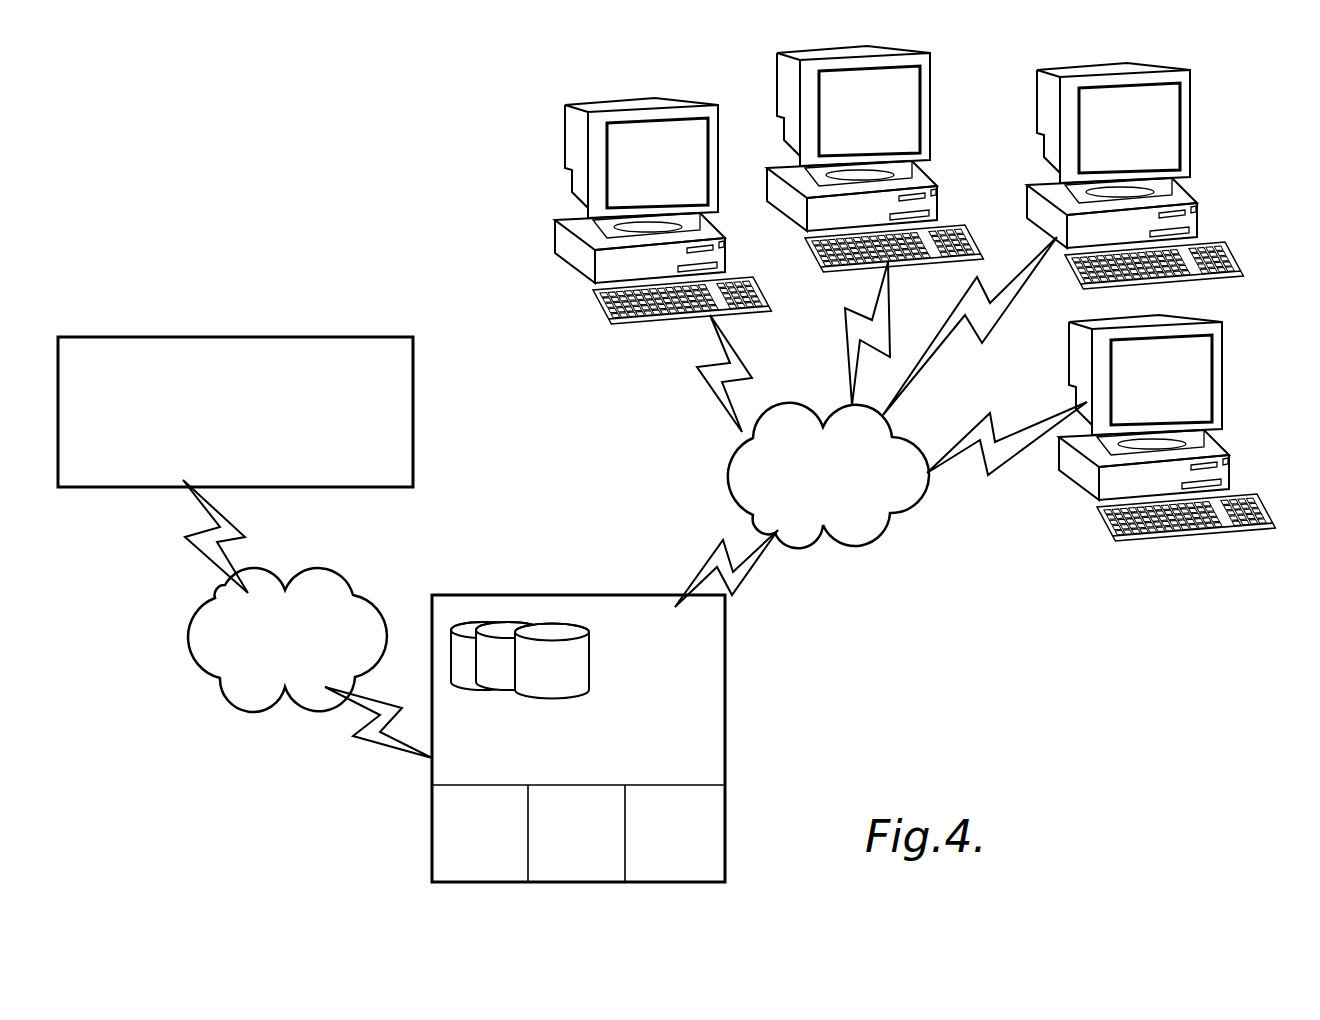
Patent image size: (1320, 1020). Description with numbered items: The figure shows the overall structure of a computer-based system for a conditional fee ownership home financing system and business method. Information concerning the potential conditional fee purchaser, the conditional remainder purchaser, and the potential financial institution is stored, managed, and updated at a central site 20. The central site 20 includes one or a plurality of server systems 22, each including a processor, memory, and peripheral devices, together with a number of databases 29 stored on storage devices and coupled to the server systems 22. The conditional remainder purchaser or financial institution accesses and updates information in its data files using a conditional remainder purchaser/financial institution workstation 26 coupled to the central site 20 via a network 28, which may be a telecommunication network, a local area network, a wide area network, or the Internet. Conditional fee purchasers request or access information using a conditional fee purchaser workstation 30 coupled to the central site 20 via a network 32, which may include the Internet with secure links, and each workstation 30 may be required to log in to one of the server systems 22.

The central site 20 is at (710, 690).
The server systems 22 is at (575, 883).
The conditional remainder purchaser/financial institution workstation 26 is at (398, 372).
The network 28 is at (323, 600).
The databases 29 is at (577, 662).
The conditional fee purchaser workstation 30 is at (625, 170).
The network 32 is at (750, 472).